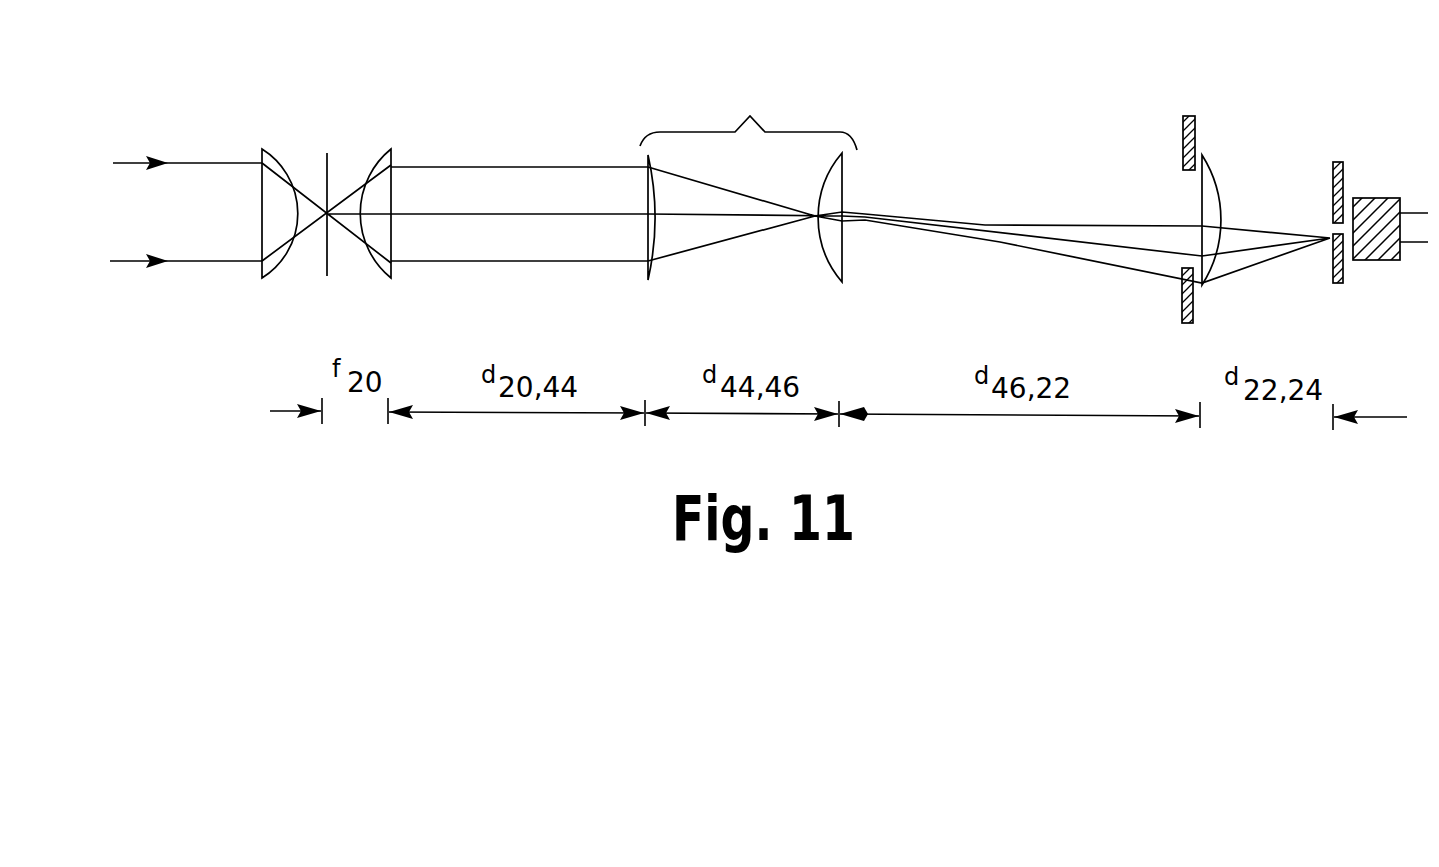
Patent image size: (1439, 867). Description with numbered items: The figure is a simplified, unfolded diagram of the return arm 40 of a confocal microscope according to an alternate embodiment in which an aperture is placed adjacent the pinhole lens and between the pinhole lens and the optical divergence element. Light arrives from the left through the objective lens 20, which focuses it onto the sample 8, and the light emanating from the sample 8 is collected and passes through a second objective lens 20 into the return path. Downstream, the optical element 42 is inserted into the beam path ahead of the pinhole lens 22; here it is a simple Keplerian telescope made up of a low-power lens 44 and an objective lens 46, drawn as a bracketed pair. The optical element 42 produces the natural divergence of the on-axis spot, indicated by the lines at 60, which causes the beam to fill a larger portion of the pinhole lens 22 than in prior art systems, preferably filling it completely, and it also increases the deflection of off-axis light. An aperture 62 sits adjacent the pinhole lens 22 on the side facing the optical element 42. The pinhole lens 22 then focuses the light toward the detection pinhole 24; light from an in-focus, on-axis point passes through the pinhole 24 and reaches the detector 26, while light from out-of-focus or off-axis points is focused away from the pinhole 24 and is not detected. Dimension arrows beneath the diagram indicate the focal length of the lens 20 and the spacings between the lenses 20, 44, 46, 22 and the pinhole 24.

The return arm 40 is at (908, 123).
The objective lens 20 is at (247, 160).
The sample 8 is at (327, 162).
The optical element 42 is at (775, 194).
The low-power lens 44 is at (648, 273).
The objective lens 46 is at (855, 262).
The pinhole lens 22 is at (1203, 168).
The aperture stop 62 is at (1185, 175).
The divergence lines 60 is at (1127, 269).
The pinhole 24 is at (1340, 223).
The detector 26 is at (1372, 198).